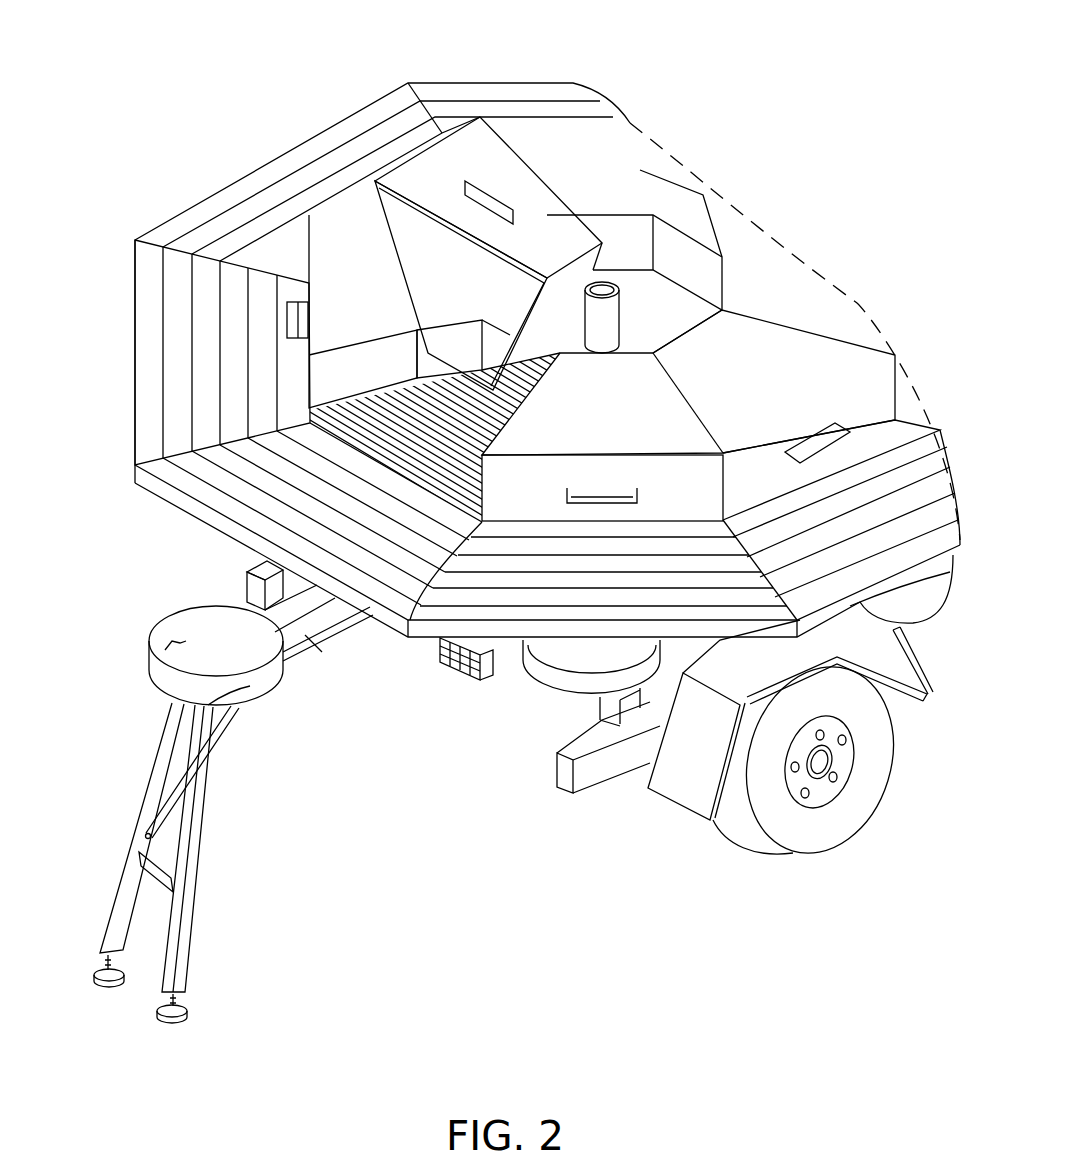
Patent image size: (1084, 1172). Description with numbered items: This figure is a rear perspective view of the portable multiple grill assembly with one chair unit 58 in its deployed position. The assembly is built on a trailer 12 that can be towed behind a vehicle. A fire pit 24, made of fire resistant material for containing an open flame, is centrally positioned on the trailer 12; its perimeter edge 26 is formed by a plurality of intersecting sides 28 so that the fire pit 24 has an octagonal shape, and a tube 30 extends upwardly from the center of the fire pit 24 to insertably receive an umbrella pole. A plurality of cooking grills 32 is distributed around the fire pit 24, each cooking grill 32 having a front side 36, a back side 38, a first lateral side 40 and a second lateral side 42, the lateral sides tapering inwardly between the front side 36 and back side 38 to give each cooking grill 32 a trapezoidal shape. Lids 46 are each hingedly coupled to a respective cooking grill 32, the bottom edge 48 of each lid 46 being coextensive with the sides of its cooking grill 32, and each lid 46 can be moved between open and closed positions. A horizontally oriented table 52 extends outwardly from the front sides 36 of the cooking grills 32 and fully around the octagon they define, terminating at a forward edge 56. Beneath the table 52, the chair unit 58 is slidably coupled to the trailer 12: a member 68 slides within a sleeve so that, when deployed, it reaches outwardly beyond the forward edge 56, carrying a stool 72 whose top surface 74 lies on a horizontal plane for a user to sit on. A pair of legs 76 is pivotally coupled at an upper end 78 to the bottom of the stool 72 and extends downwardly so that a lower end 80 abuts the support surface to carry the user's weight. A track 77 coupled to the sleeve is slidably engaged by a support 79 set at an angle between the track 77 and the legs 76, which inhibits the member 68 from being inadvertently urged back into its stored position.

The trailer 12 is at (632, 884).
The fire pit 24 is at (697, 300).
The perimeter edge 26 is at (703, 300).
The intersecting sides 28 is at (613, 267).
The tube 30 is at (603, 282).
The cooking grills 32 is at (417, 378).
The front side 36 is at (285, 425).
The back side 38 is at (507, 413).
The first lateral side 40 is at (372, 417).
The second lateral side 42 is at (420, 605).
The lids 46 is at (832, 365).
The bottom edge 48 is at (533, 522).
The table 52 is at (133, 355).
The forward edge 56 is at (150, 487).
The chair units 58 is at (173, 777).
The member 68 is at (288, 618).
The stool 72 is at (212, 606).
The top surface 74 is at (176, 646).
The legs 76 is at (142, 822).
The track 77 is at (365, 618).
The upper end 78 is at (248, 688).
The support 79 is at (227, 755).
The lower end 80 is at (190, 1018).